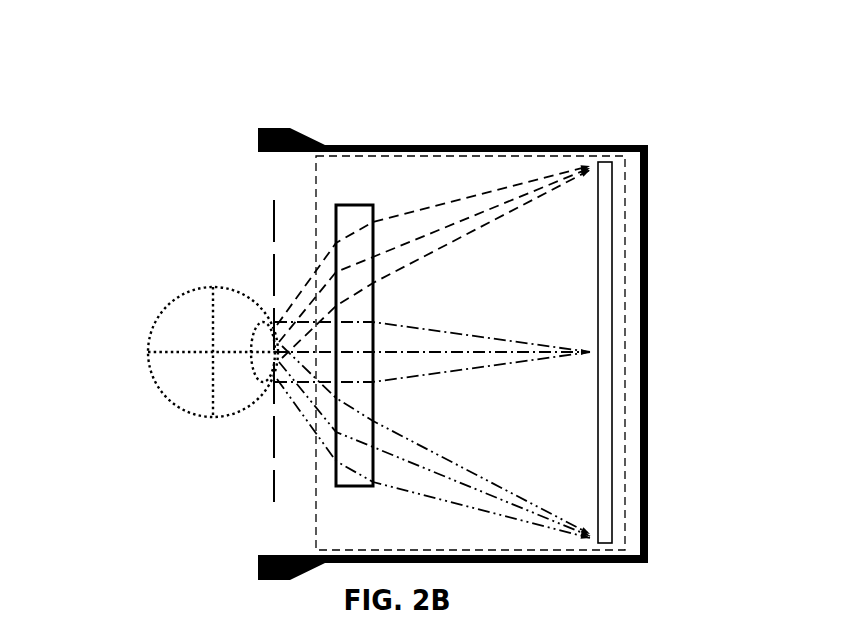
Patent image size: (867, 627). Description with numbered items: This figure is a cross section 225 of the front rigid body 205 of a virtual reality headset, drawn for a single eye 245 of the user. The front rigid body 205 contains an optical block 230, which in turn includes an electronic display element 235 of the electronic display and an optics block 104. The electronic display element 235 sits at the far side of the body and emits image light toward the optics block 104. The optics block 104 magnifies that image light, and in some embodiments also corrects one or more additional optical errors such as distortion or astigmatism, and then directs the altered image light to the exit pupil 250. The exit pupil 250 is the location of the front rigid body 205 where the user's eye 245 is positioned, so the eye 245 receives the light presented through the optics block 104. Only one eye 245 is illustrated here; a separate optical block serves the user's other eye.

The cross section 225 is at (10, 33).
The front rigid body 205 is at (617, 146).
The optical block 230 is at (317, 467).
The electronic display element 235 is at (612, 277).
The optics block 104 is at (333, 215).
The eye 245 is at (180, 297).
The exit pupil 250 is at (263, 483).